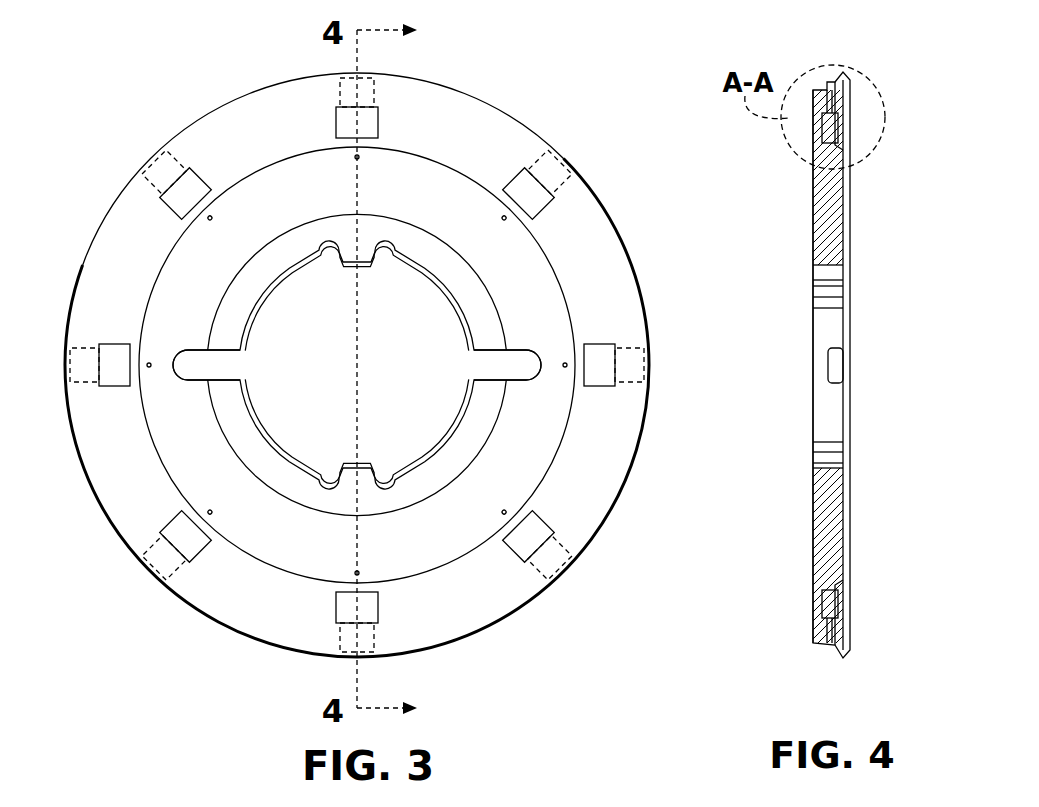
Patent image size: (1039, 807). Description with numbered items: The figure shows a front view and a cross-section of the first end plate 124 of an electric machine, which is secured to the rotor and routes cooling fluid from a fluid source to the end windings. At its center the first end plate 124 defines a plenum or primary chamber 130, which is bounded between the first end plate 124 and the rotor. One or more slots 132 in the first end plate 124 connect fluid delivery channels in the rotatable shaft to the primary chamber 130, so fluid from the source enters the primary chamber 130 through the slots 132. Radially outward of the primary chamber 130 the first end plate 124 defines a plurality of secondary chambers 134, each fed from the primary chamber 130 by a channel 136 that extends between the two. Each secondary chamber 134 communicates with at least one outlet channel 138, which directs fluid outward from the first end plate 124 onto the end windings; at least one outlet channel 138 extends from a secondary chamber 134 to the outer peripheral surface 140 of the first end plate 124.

In FIG. 3, the first end plate 124 is at (188, 54).
In FIG. 4, the first end plate 124 is at (792, 58).
In FIG. 3, the primary chamber 130 is at (436, 192).
In FIG. 4, the primary chamber 130 is at (841, 365).
In FIG. 3, the slots 132 is at (220, 362).
In FIG. 4, the slots 132 is at (835, 365).
In FIG. 3, the secondary chambers 134 is at (380, 124).
In FIG. 4, the secondary chambers 134 is at (838, 130).
In FIG. 4, the channels 136 is at (830, 160).
In FIG. 3, the outlet channels 138 is at (340, 86).
In FIG. 4, the outlet channels 138 is at (838, 112).
In FIG. 3, the outer peripheral surface 140 is at (646, 446).
In FIG. 4, the outer peripheral surface 140 is at (827, 90).